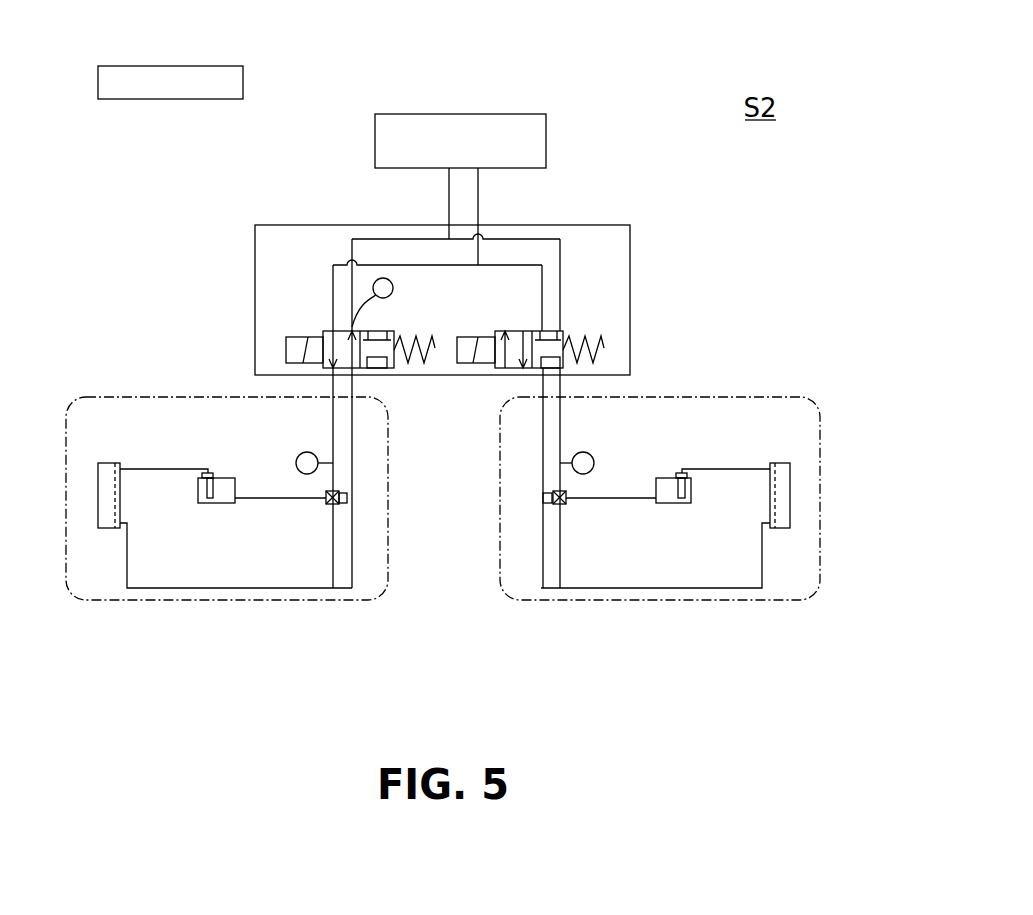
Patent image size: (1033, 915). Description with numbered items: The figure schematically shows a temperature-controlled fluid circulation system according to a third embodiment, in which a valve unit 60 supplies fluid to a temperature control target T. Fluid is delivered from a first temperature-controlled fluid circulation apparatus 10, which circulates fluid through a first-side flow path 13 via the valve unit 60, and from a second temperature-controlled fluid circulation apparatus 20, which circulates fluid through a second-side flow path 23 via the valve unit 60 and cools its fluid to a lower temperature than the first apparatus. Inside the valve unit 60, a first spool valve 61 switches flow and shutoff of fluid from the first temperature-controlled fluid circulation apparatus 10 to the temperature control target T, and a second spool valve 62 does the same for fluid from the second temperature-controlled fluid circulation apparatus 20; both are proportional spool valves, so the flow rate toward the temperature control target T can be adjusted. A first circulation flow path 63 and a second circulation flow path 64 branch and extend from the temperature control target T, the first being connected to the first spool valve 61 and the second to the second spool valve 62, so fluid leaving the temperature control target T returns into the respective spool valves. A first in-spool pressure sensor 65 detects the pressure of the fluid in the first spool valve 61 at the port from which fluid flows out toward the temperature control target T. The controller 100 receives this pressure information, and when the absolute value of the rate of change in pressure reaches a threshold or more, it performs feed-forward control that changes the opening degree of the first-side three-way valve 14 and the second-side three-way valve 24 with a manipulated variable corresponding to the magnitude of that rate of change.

The controller 100 is at (190, 63).
The temperature control target T is at (500, 112).
The valve unit 60 is at (460, 271).
The first spool valve 61 is at (306, 312).
The second spool valve 62 is at (583, 313).
The first circulation flow path 63 is at (408, 267).
The second circulation flow path 64 is at (517, 267).
The first in-spool pressure sensor 65 is at (385, 277).
The first temperature-controlled fluid circulation apparatus 10 is at (227, 494).
The first-side flow path 13 is at (164, 599).
The first-side three-way valve 14 is at (314, 523).
The second temperature-controlled fluid circulation apparatus 20 is at (667, 494).
The second-side flow path 23 is at (600, 598).
The second-side three-way valve 24 is at (582, 511).